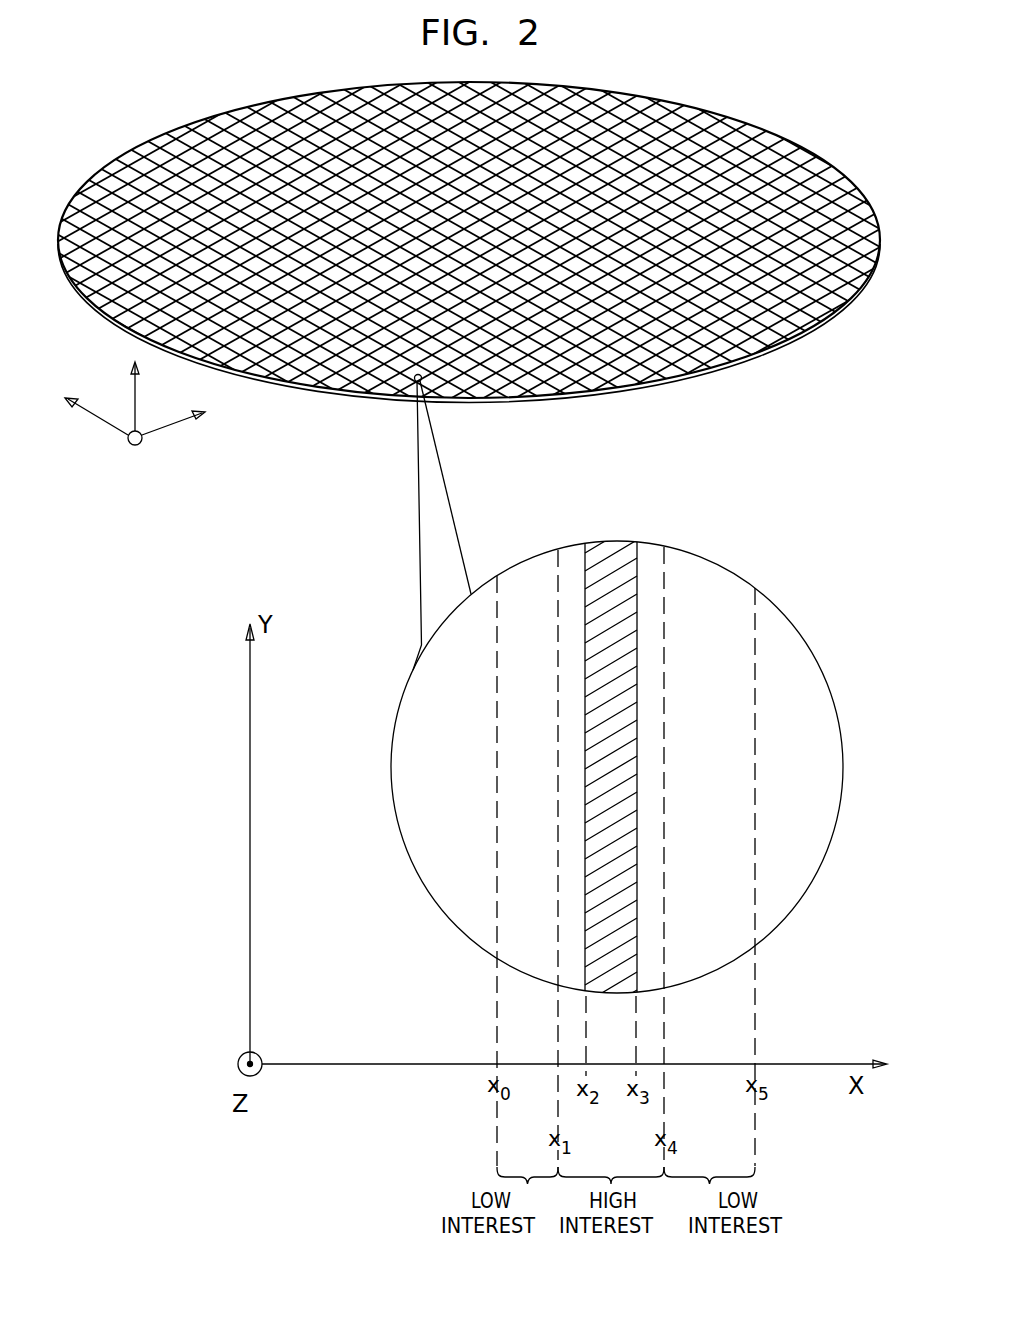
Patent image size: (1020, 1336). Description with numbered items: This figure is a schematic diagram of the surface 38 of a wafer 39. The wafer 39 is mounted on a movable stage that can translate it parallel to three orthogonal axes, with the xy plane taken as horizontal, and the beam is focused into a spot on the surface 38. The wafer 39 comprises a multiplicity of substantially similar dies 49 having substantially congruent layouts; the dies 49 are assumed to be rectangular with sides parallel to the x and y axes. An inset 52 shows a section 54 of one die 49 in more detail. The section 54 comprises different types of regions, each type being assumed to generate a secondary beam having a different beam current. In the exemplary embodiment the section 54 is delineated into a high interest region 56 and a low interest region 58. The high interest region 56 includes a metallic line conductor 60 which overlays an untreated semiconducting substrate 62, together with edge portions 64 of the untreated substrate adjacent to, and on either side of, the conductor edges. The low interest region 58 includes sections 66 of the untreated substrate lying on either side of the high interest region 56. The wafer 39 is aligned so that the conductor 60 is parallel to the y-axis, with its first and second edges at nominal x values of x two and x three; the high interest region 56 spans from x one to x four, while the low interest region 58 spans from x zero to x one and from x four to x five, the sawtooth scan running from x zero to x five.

The surface 38 is at (690, 330).
The wafer 39 is at (810, 330).
The dies 49 is at (338, 420).
The inset 52 is at (813, 647).
The section 54 is at (635, 815).
The high interest region 56 is at (642, 742).
The low interest region 58 is at (508, 893).
The metallic line conductor 60 is at (613, 937).
The untreated semiconducting substrate 62 is at (705, 560).
The edge portions 64 is at (572, 730).
The sections 66 is at (526, 565).